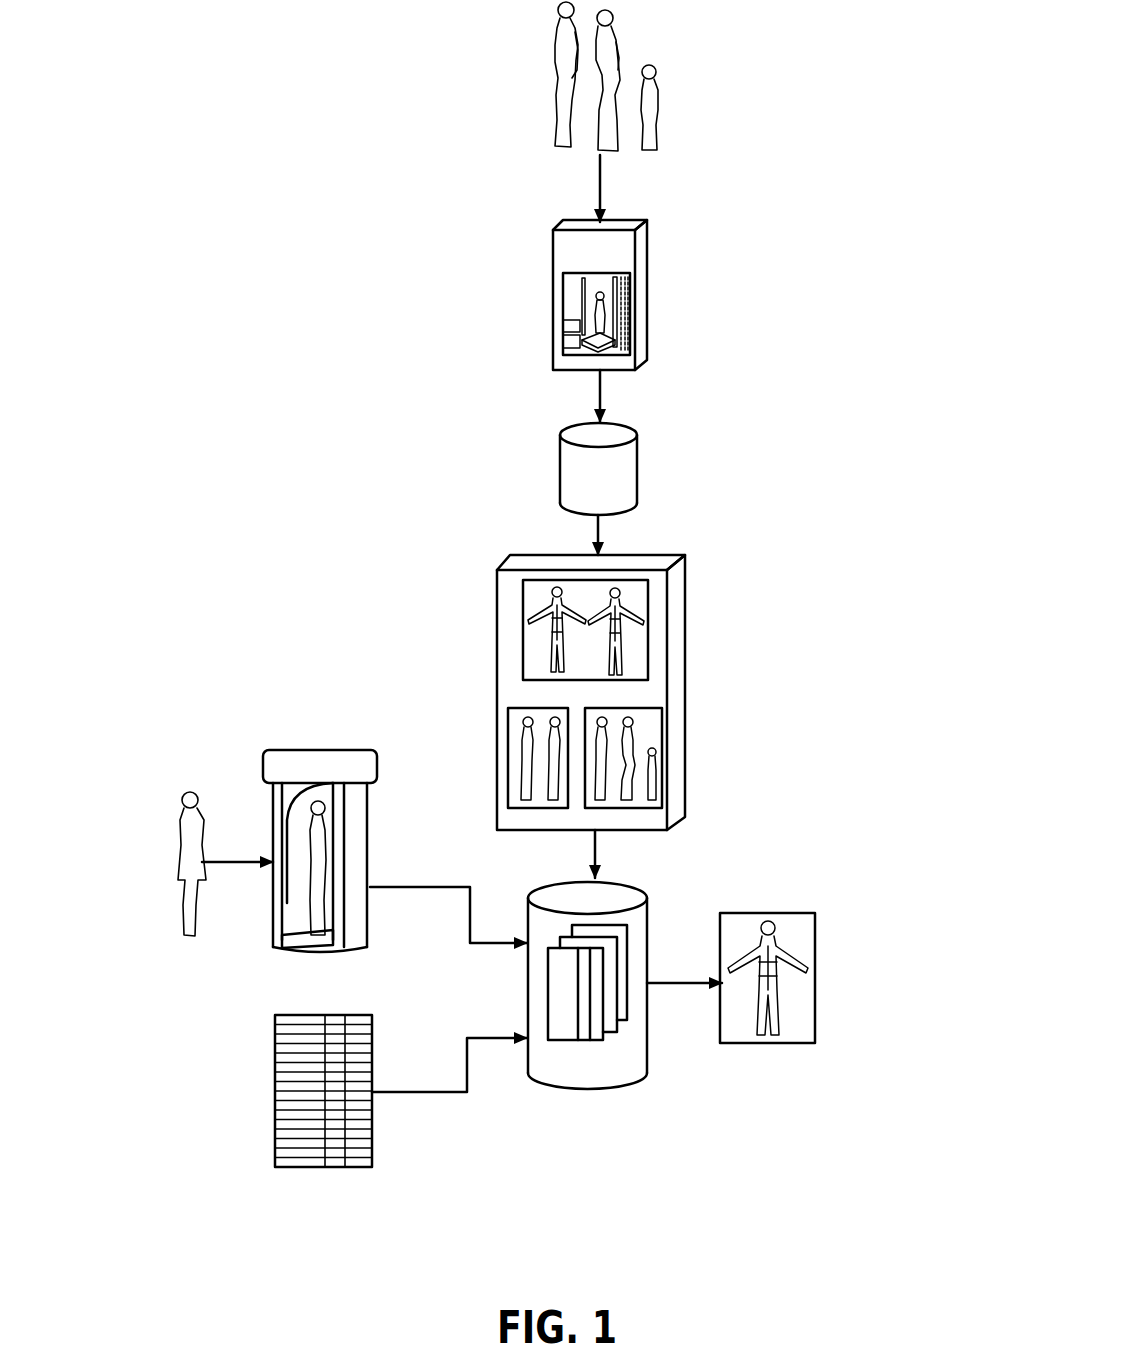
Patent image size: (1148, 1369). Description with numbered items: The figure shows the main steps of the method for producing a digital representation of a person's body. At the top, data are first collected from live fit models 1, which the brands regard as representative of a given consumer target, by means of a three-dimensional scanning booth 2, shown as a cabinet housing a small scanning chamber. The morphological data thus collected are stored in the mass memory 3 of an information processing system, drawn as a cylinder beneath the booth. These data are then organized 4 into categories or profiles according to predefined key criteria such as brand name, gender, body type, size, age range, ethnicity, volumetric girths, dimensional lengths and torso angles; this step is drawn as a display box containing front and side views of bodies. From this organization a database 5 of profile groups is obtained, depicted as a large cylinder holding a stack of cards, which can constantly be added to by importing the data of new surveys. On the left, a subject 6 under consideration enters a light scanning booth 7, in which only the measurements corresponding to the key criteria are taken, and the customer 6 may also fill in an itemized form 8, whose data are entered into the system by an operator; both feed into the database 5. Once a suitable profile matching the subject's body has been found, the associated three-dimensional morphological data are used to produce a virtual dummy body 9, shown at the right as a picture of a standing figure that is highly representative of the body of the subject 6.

The live fit models 1 is at (556, 70).
The three-dimensional scanning booth 2 is at (622, 285).
The mass memory 3 is at (587, 475).
The data organization step 4 is at (640, 690).
The database of profile groups 5 is at (603, 1042).
The subject 6 is at (178, 810).
The light scanning booth 7 is at (322, 763).
The itemized form 8 is at (290, 1120).
The virtual dummy body 9 is at (783, 955).